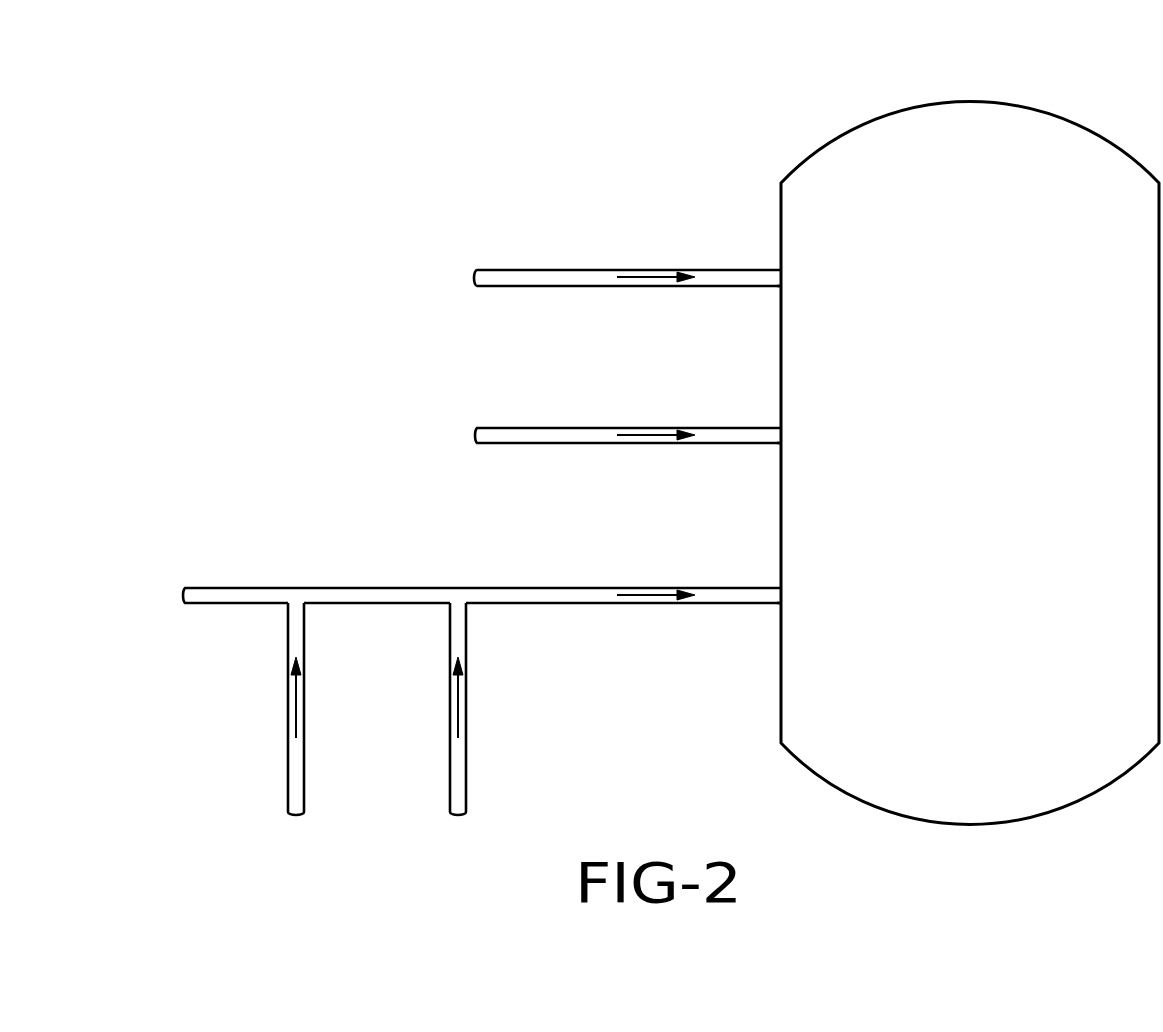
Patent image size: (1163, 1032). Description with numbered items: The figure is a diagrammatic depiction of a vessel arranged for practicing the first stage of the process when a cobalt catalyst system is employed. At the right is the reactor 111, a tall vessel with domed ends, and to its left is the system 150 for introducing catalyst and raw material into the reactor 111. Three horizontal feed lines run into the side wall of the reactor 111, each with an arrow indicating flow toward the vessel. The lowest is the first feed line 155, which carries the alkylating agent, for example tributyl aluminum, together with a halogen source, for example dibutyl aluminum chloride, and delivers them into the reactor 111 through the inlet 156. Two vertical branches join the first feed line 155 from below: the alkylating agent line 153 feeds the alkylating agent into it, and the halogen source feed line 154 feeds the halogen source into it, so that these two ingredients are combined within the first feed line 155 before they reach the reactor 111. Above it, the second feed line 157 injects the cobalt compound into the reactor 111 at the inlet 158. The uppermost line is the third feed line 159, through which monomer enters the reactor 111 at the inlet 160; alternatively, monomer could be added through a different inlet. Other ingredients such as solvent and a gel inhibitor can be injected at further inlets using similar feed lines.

The reactor 111 is at (850, 130).
The system for introducing catalyst and raw material 150 is at (497, 146).
The alkylating agent line 153 is at (288, 727).
The halogen source feed line 154 is at (466, 727).
The first feed line 155 is at (555, 587).
The inlet 156 is at (779, 592).
The second feed line 157 is at (555, 427).
The inlet 158 is at (778, 433).
The third feed line 159 is at (557, 269).
The inlet 160 is at (778, 275).